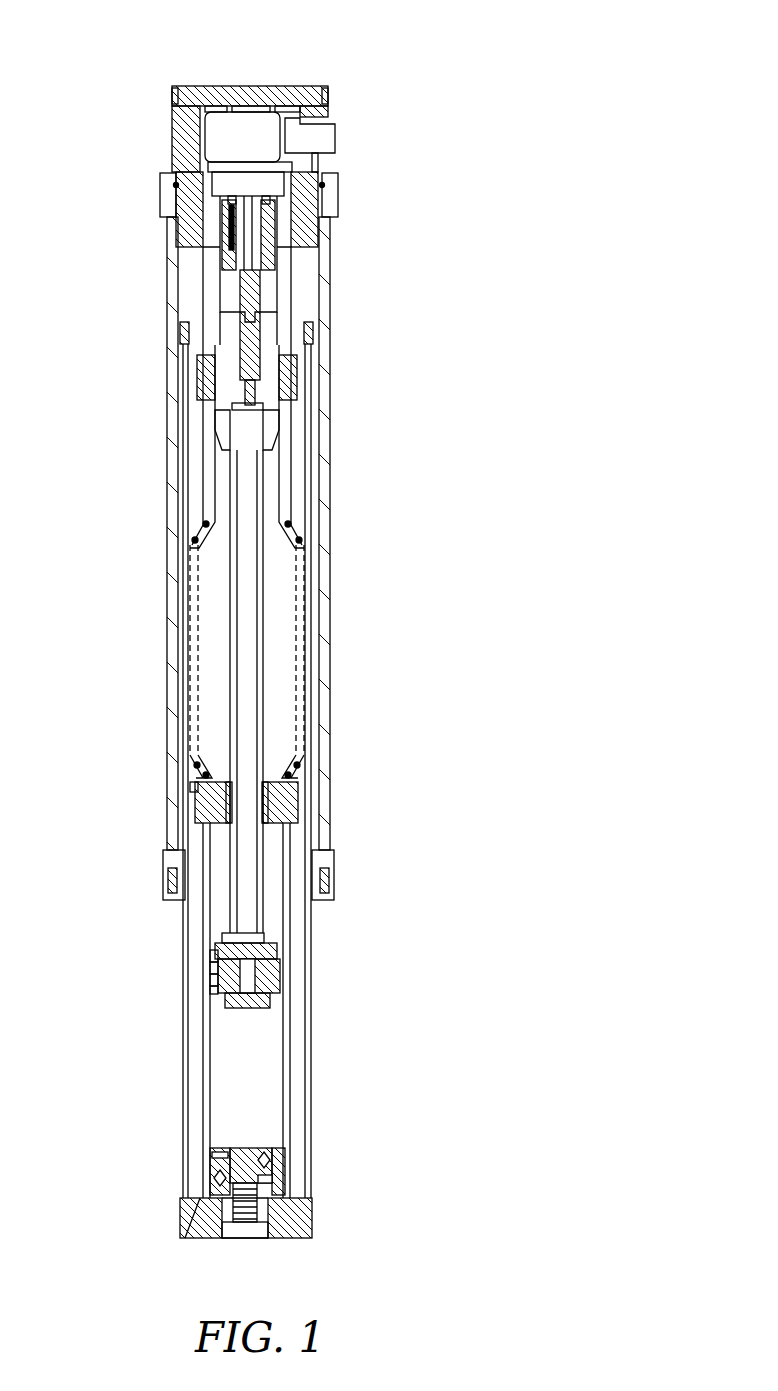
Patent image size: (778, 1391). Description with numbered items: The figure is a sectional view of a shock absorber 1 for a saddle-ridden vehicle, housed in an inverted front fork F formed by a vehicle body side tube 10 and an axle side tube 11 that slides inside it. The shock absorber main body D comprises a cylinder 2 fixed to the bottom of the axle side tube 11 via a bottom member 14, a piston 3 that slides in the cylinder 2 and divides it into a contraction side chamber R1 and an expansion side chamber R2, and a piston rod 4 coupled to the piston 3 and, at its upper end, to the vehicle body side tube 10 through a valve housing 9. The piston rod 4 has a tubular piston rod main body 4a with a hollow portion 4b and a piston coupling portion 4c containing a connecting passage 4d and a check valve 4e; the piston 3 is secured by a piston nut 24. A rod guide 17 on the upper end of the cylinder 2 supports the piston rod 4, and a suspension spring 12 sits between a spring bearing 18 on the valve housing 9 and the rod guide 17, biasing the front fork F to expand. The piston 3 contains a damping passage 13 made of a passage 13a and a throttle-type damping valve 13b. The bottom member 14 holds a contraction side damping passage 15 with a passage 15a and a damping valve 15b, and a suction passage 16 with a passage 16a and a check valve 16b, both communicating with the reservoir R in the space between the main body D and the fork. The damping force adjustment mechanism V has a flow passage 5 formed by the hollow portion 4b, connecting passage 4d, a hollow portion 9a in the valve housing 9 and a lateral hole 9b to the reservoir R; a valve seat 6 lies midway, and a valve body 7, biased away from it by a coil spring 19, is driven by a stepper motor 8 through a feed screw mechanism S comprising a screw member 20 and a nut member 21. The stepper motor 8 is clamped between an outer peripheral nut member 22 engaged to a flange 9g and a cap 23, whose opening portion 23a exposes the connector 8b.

The shock absorber 1 is at (306, 371).
The cylinder 2 is at (290, 1038).
The piston 3 is at (280, 976).
The piston rod 4 is at (275, 562).
The piston rod main body 4a is at (265, 610).
The hollow portion 4b is at (250, 735).
The piston coupling portion 4c is at (225, 936).
The connecting passage 4d is at (277, 951).
The check valve 4e is at (212, 968).
The flow passage 5 is at (258, 653).
The valve seat 6 is at (283, 398).
The valve body 7 is at (222, 420).
The stepper motor 8 is at (252, 130).
The connector 8b is at (335, 137).
The valve housing 9 is at (203, 337).
The hollow portion 9a is at (203, 288).
The lateral hole 9b is at (205, 395).
The flange 9g is at (162, 198).
The vehicle body side tube 10 is at (175, 305).
The axle side tube 11 is at (315, 1060).
The suspension spring 12 is at (193, 540).
The damping passage 13 is at (222, 1012).
The passage 13a is at (215, 990).
The damping valve 13b is at (222, 968).
The bottom member 14 is at (287, 1178).
The contraction side damping passage 15 is at (285, 1232).
The passage 15a is at (290, 1202).
The damping valve 15b is at (285, 1160).
The suction passage 16 is at (215, 1163).
The passage 16a is at (215, 1153).
The check valve 16b is at (205, 1236).
The rod guide 17 is at (212, 803).
The spring bearing 18 is at (298, 448).
The coil spring 19 is at (205, 382).
The screw member 20 is at (178, 225).
The nut member 21 is at (238, 300).
The outer peripheral nut member 22 is at (278, 222).
The cap 23 is at (212, 95).
The opening portion 23a is at (328, 112).
The piston nut 24 is at (270, 1000).
The shock absorber main body D is at (300, 808).
The front fork F is at (368, 233).
The reservoir R is at (197, 902).
The contraction side chamber R1 is at (282, 917).
The expansion side chamber R2 is at (232, 1072).
The feed screw mechanism S is at (280, 272).
The damping force adjustment mechanism V is at (300, 296).